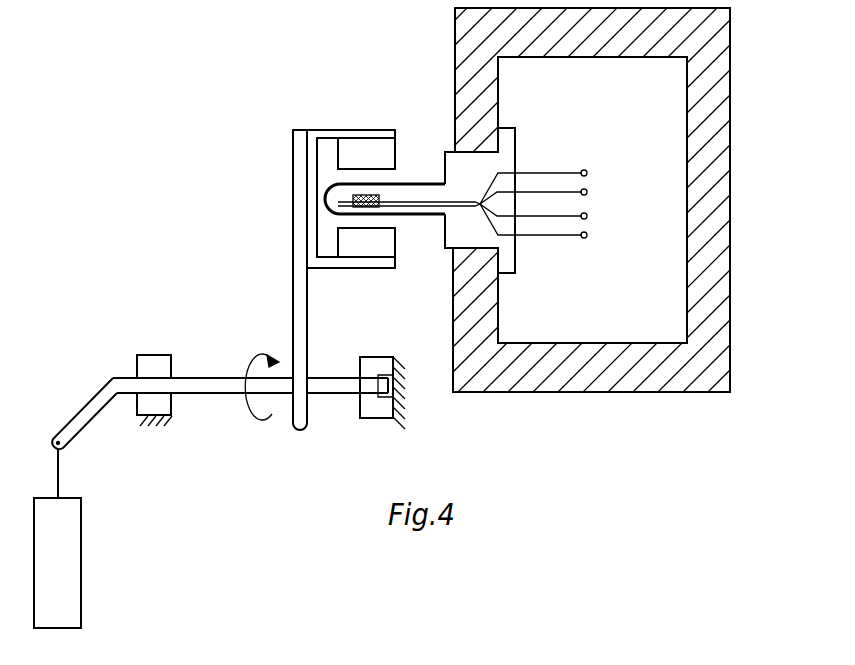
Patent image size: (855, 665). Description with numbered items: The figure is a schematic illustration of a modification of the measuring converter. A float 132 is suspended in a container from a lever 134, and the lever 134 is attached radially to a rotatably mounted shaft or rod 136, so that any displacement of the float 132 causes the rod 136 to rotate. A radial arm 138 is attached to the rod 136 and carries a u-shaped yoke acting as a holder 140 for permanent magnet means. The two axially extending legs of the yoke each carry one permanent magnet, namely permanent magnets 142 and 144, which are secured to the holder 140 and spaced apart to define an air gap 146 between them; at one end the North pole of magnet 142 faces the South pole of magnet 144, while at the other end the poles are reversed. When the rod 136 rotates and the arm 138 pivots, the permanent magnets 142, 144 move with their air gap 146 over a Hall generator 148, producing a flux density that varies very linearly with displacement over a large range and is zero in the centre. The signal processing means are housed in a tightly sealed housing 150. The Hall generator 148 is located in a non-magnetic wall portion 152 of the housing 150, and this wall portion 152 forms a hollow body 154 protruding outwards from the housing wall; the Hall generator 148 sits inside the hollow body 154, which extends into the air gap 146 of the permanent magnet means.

The float 132 is at (77, 561).
The lever 134 is at (88, 418).
The shaft or rod 136 is at (193, 384).
The radial arm 138 is at (300, 316).
The holder 140 is at (332, 132).
The permanent magnet 142 is at (390, 148).
The permanent magnet 144 is at (390, 250).
The air gap 146 is at (390, 179).
The Hall generator 148 is at (348, 197).
The housing 150 is at (456, 31).
The non-magnetic wall portion 152 is at (442, 217).
The hollow body 154 is at (327, 197).